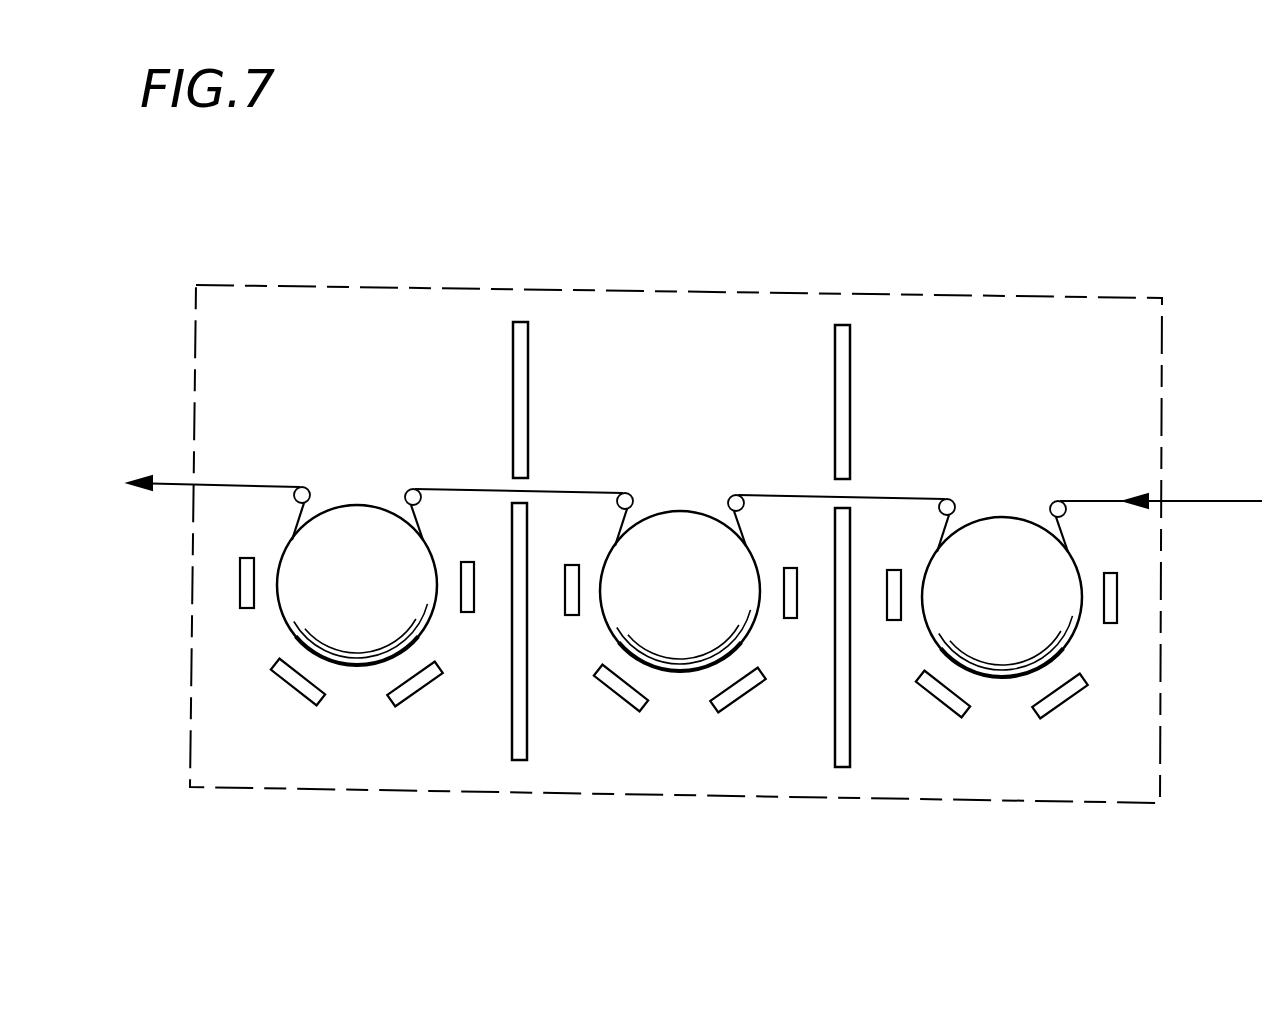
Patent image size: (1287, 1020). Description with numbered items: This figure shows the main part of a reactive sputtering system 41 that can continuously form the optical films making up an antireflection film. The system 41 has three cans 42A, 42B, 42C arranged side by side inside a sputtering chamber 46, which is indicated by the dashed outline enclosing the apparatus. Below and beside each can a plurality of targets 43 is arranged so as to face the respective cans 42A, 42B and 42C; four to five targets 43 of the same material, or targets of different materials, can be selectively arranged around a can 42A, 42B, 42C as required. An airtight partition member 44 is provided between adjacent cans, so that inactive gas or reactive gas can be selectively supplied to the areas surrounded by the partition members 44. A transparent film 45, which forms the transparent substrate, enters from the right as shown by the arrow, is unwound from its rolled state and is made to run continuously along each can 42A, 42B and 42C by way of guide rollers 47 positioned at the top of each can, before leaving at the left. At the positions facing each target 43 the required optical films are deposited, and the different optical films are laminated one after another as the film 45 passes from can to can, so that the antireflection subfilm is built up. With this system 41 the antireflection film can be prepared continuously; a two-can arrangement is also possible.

The reactive sputtering system 41 is at (1258, 330).
The can 42A is at (1008, 539).
The can 42B is at (688, 534).
The can 42C is at (368, 530).
The target 43 is at (417, 690).
The airtight partition member 44 is at (527, 739).
The transparent film 45 is at (1107, 497).
The sputtering chamber 46 is at (1157, 742).
The guide roller 47 is at (302, 487).